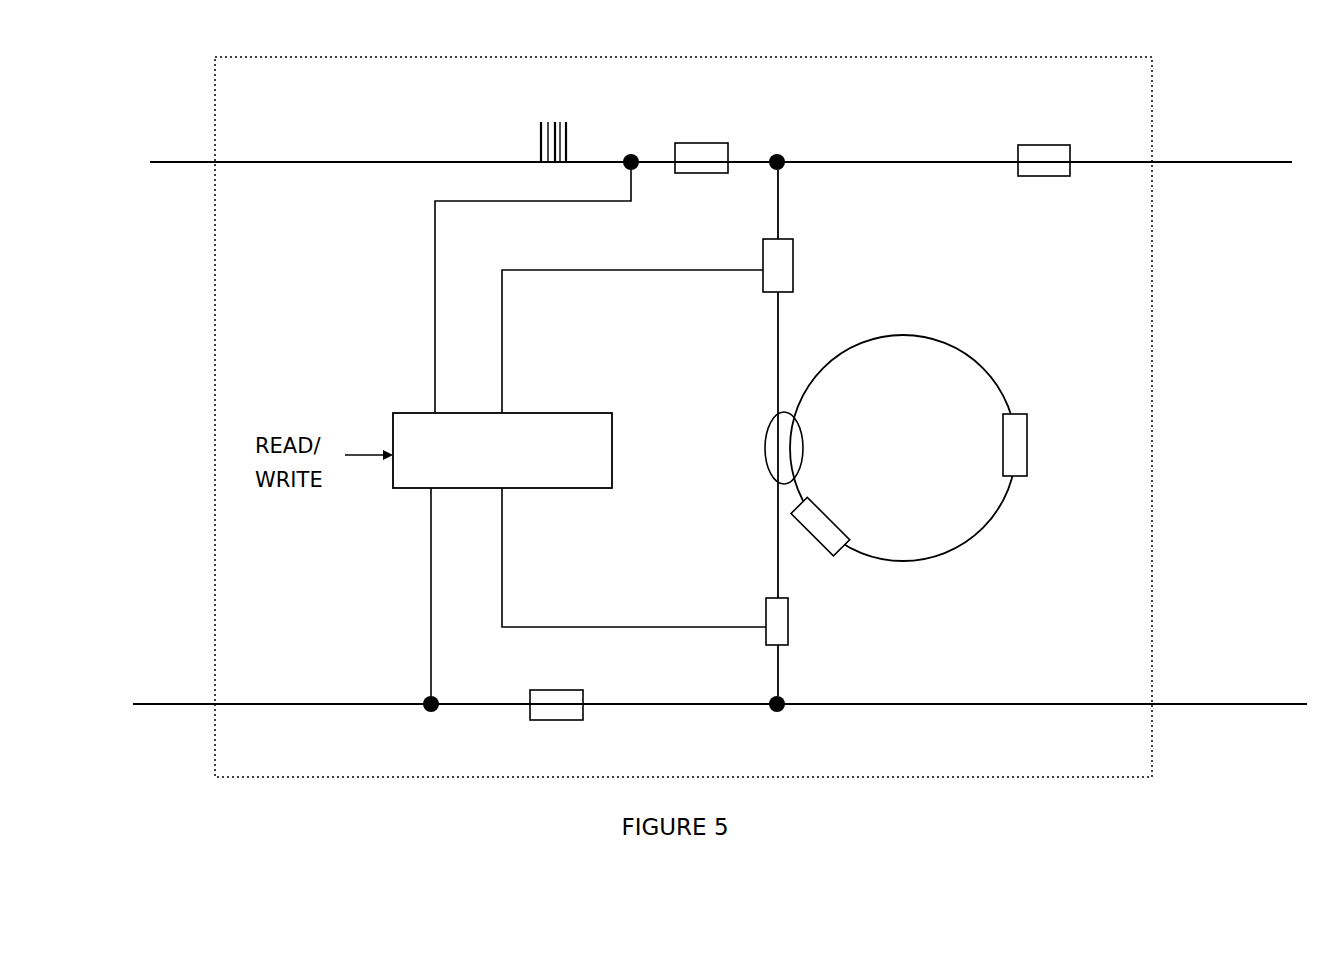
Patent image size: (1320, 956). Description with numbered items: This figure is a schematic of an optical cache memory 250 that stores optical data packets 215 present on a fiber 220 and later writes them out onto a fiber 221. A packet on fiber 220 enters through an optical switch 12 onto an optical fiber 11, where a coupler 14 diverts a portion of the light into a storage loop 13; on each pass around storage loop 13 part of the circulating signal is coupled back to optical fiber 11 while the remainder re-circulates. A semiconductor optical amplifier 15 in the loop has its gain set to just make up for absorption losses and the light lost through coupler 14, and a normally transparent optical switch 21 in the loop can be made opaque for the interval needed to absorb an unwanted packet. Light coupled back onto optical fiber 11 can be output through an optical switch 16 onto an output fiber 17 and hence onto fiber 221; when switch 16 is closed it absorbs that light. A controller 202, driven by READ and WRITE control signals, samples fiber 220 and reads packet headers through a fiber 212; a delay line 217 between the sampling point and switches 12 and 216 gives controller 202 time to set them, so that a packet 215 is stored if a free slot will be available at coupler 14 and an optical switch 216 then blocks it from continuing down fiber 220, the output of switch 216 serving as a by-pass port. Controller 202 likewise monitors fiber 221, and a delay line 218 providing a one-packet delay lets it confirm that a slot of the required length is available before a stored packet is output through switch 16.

The optical fiber 11 is at (779, 348).
The optical switch 12 is at (794, 266).
The storage loop 13 is at (973, 368).
The coupler 14 is at (766, 448).
The semiconductor optical amplifier 15 is at (1022, 456).
The optical switch 16 is at (789, 612).
The output fiber 17 is at (779, 678).
The optical switch 21 is at (822, 530).
The controller 202 is at (502, 450).
The fiber 212 is at (433, 233).
The data packet 215 is at (570, 132).
The optical switch 216 is at (1052, 148).
The delay line 217 is at (714, 146).
The delay line 218 is at (566, 692).
The fiber 220 is at (183, 164).
The fiber 221 is at (182, 706).
The optical cache memory 250 is at (215, 326).